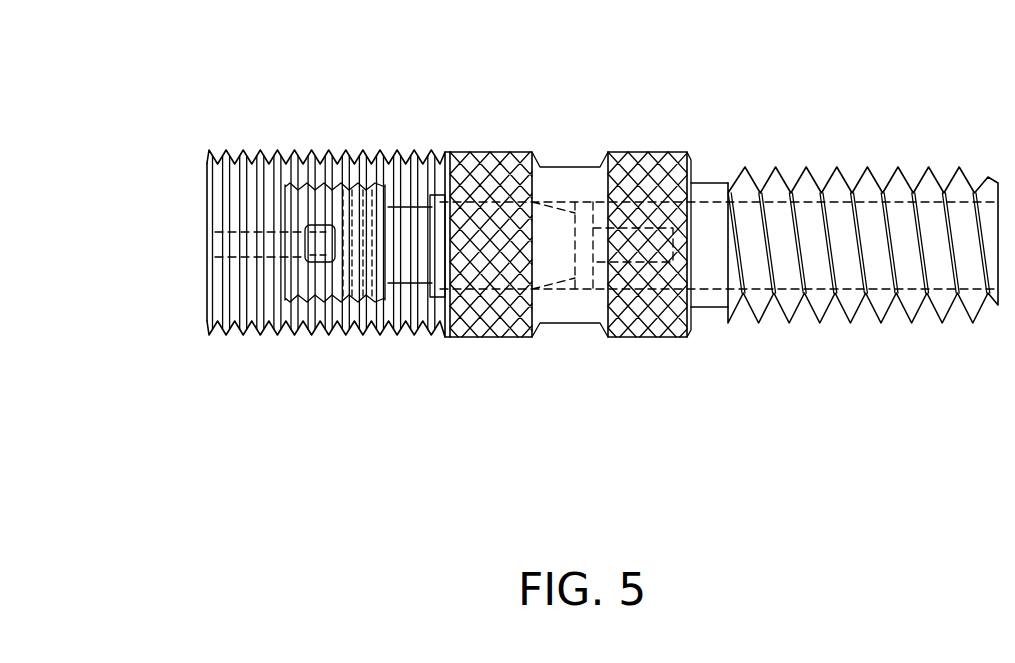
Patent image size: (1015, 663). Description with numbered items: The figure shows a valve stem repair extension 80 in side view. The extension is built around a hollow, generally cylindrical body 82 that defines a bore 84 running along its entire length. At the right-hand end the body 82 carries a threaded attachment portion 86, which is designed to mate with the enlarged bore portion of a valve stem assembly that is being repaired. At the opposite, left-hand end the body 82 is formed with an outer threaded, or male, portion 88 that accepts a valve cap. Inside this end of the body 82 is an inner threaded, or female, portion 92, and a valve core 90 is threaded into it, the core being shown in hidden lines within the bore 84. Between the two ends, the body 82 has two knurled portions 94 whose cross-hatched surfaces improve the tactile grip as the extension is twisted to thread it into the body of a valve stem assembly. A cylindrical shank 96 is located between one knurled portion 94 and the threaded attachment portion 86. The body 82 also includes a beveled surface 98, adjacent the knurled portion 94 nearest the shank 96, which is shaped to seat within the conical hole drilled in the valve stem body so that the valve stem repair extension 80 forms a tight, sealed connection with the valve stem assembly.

The valve stem repair extension 80 is at (432, 378).
The body 82 is at (458, 140).
The bore 84 is at (865, 215).
The threaded attachment portion 86 is at (920, 313).
The outer threaded (male) portion 88 is at (272, 322).
The valve core 90 is at (207, 238).
The inner threaded (female) portion 92 is at (198, 289).
The knurled portions 94 is at (636, 152).
The cylindrical shank 96 is at (710, 182).
The beveled surface 98 is at (690, 322).